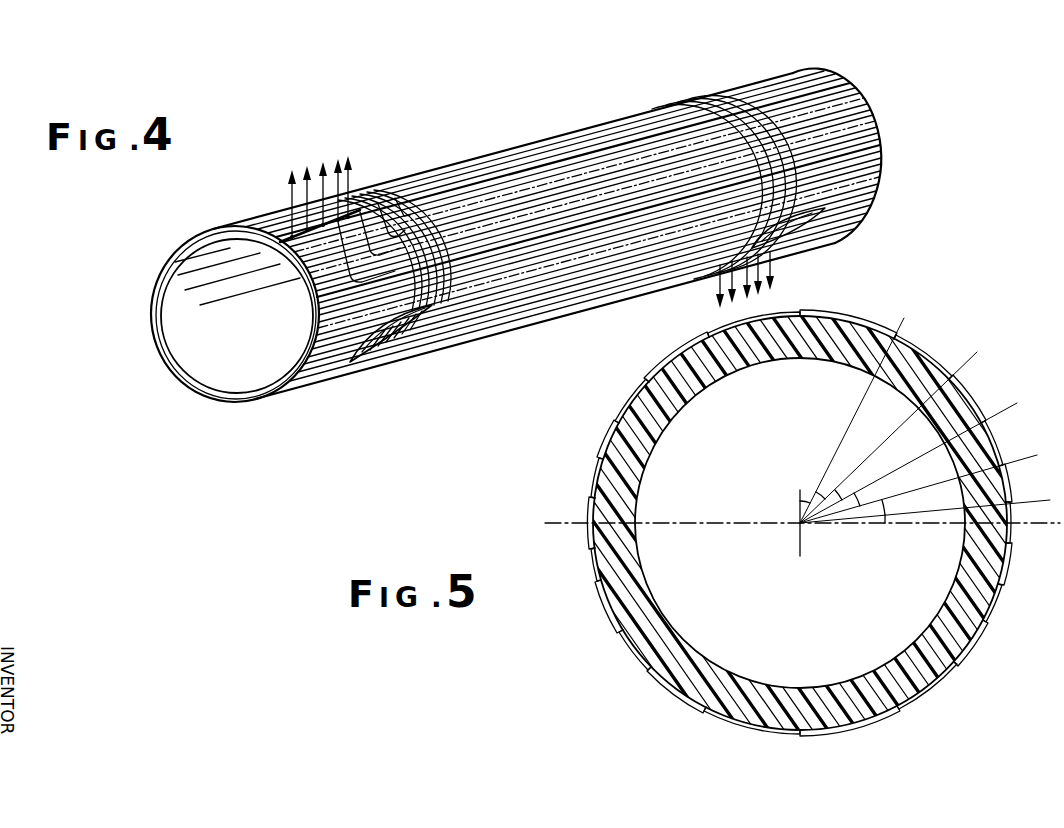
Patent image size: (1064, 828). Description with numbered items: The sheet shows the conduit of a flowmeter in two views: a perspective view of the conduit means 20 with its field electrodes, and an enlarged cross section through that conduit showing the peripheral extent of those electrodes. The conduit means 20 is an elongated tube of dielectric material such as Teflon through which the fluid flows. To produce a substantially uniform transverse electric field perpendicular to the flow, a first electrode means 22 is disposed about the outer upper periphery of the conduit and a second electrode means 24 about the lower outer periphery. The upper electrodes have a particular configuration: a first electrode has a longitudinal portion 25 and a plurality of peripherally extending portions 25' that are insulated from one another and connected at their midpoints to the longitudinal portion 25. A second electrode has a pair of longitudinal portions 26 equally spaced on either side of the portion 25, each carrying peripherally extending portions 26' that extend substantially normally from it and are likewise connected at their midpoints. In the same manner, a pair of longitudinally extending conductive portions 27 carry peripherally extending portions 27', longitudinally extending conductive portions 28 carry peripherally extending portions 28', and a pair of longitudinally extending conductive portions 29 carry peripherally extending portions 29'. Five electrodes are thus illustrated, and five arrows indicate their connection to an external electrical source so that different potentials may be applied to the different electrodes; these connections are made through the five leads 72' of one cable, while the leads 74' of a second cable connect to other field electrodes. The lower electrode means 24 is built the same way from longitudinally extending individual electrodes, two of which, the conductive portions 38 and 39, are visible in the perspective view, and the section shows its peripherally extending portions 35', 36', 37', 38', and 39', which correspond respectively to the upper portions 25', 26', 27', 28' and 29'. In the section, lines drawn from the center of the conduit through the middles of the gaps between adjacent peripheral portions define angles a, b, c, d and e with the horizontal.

In FIG. 4, the conduit means 20 is at (222, 392).
In FIG. 5, the conduit means 20 is at (735, 365).
In FIG. 4, the first electrode means 22 is at (258, 212).
In FIG. 4, the second electrode means 24 is at (387, 376).
In FIG. 4, the longitudinal portion 25 is at (555, 154).
In FIG. 4, the longitudinal portions 26 is at (563, 160).
In FIG. 4, the longitudinally extending conductive portions 27 is at (571, 167).
In FIG. 4, the longitudinally extending conductive portions 28 is at (580, 207).
In FIG. 4, the longitudinally extending conductive portions 29 is at (588, 219).
In FIG. 4, the longitudinally extending conductive portion 38 is at (599, 249).
In FIG. 4, the longitudinally extending conductive portion 39 is at (600, 243).
In FIG. 4, the leads 72' is at (315, 180).
In FIG. 4, the leads 74' is at (772, 285).
In FIG. 4, the peripherally extending portions 25' is at (367, 228).
In FIG. 5, the peripherally extending portions 25' is at (809, 310).
In FIG. 4, the peripherally extending portions 26' is at (512, 241).
In FIG. 5, the peripherally extending portions 26' is at (802, 340).
In FIG. 4, the peripherally extending conductive portions 27' is at (422, 213).
In FIG. 5, the peripherally extending conductive portions 27' is at (801, 385).
In FIG. 4, the peripherally extending portions 28' is at (457, 273).
In FIG. 5, the peripherally extending portions 28' is at (800, 435).
In FIG. 4, the peripherally extending portions 29' is at (436, 282).
In FIG. 5, the peripherally extending portions 29' is at (801, 503).
In FIG. 5, the peripherally extending portion 35' is at (777, 727).
In FIG. 5, the peripherally extending portion 36' is at (791, 701).
In FIG. 5, the peripherally extending portion 37' is at (802, 658).
In FIG. 4, the peripherally extending portion 38' is at (622, 251).
In FIG. 5, the peripherally extending portion 38' is at (798, 618).
In FIG. 4, the peripherally extending portion 39' is at (563, 256).
In FIG. 5, the peripherally extending portion 39' is at (793, 580).